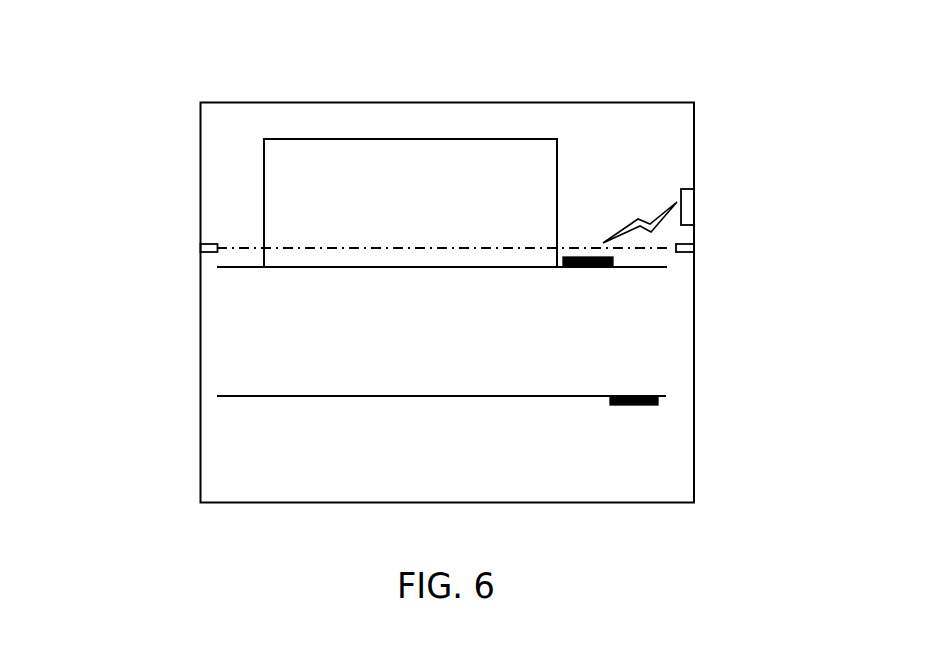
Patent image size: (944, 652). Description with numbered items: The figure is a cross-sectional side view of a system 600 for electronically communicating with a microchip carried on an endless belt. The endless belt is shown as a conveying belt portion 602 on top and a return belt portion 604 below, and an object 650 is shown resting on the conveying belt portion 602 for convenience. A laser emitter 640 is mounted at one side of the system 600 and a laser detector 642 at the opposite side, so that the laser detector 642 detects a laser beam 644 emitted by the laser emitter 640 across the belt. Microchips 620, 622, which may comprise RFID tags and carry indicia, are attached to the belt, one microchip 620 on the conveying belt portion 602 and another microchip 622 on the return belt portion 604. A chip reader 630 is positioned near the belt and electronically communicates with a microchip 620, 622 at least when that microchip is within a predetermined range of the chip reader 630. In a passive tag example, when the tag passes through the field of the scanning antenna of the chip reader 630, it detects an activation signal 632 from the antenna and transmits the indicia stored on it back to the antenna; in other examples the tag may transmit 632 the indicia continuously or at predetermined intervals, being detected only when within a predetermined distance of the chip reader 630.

The system 600 is at (120, 108).
The object 650 is at (276, 166).
The laser emitter 640 is at (200, 246).
The laser detector 642 is at (694, 248).
The chip reader 630 is at (687, 189).
The activation signal 632 is at (639, 218).
The laser beam 644 is at (657, 247).
The conveying belt portion 602 is at (240, 268).
The microchip 620 is at (595, 268).
The return belt portion 604 is at (222, 399).
The microchip 622 is at (658, 403).